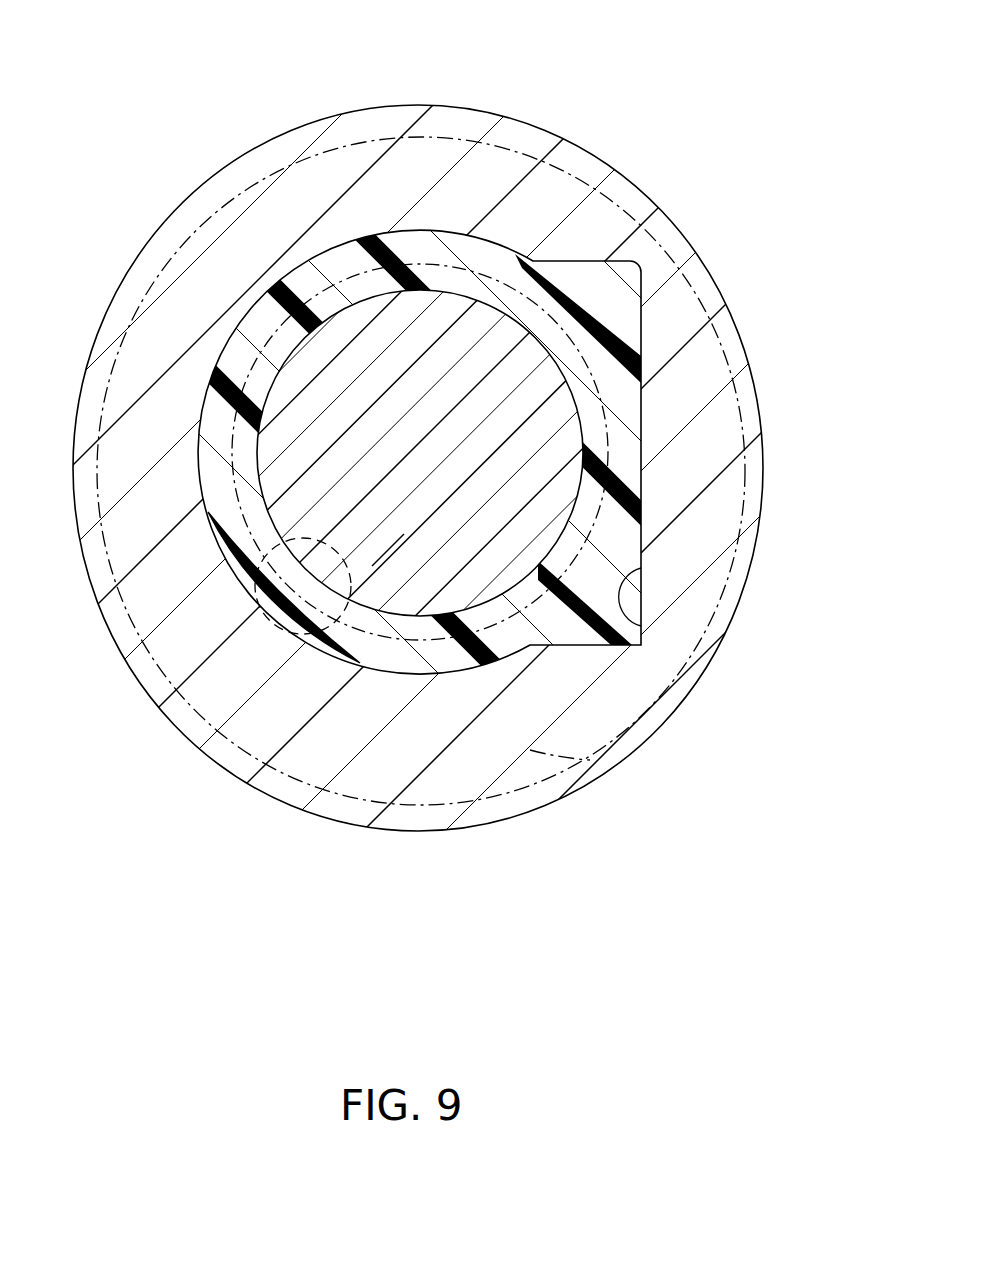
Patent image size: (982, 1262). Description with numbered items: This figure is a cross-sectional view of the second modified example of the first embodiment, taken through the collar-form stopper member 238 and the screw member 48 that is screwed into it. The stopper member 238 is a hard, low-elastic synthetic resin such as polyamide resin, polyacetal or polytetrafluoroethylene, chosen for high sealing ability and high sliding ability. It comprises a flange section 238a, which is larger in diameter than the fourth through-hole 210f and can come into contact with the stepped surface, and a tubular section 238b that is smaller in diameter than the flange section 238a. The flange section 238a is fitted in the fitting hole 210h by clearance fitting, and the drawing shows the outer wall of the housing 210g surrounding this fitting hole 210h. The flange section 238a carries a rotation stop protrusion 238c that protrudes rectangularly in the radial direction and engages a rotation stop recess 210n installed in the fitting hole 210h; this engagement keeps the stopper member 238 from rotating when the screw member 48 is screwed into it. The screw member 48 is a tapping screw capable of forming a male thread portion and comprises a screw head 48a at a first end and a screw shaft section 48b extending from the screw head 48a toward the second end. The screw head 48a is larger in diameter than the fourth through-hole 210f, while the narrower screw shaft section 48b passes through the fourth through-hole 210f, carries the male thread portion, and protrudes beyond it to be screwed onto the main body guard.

The stopper member 238 is at (343, 237).
The flange section 238a is at (375, 232).
The tubular section 238b is at (443, 232).
The rotation stop protrusion 238c is at (582, 257).
The housing 210g is at (592, 118).
The rotation stop recess 210n is at (647, 627).
The fitting hole 210h is at (228, 548).
The fourth through-hole 210f is at (277, 643).
The screw member 48 is at (425, 630).
The screw head 48a is at (557, 743).
The screw shaft section 48b is at (388, 550).